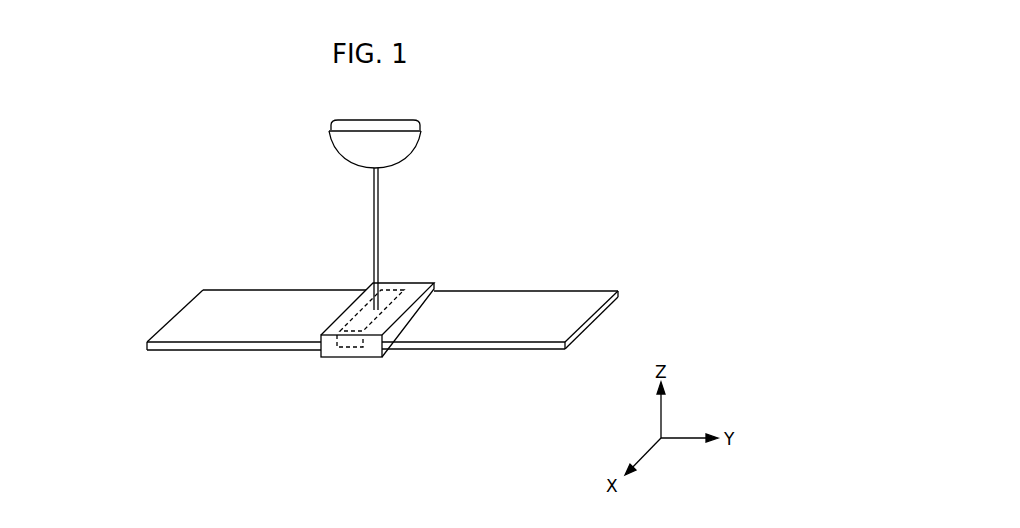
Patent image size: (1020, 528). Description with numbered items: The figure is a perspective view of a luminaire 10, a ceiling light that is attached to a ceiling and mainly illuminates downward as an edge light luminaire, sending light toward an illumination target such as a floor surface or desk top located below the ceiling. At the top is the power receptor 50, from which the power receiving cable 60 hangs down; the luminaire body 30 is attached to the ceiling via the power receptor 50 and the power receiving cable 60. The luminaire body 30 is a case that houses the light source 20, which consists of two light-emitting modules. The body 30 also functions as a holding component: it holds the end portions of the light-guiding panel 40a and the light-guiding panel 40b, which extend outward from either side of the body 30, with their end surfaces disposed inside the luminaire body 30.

The luminaire 10 is at (628, 159).
The light source 20 is at (362, 357).
The luminaire body 30 is at (415, 280).
The light-guiding panel 40a is at (578, 310).
The light-guiding panel 40b is at (190, 315).
The power receptor 50 is at (402, 143).
The power receiving cable 60 is at (378, 203).